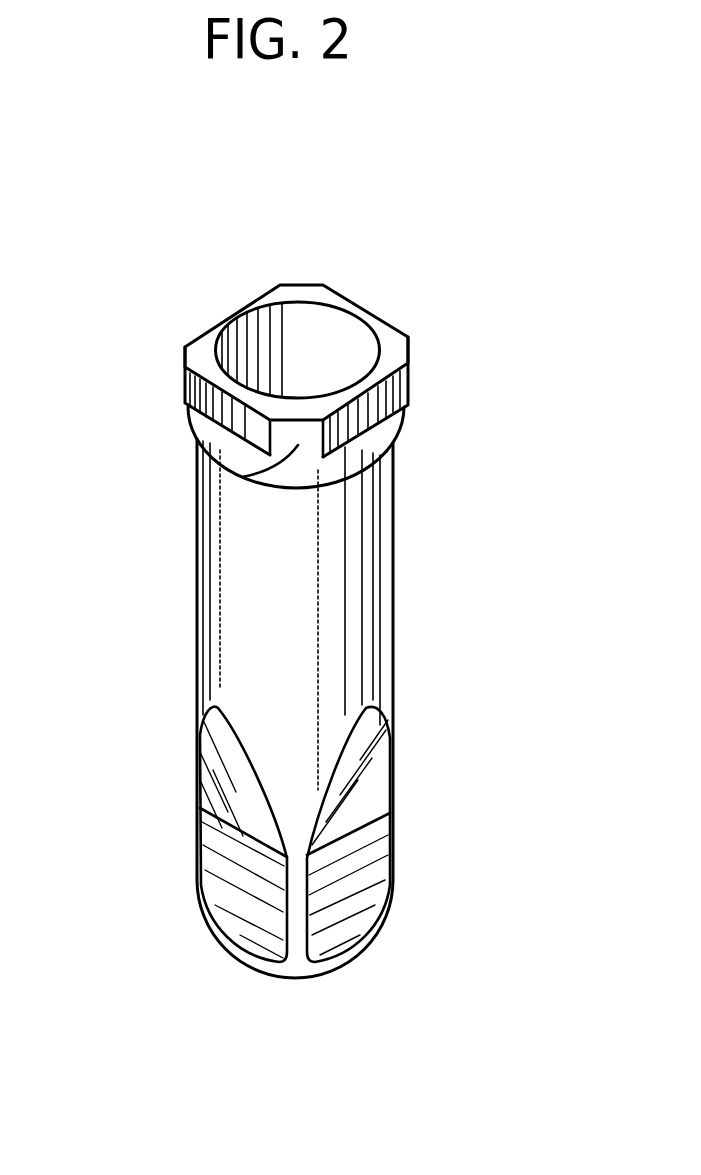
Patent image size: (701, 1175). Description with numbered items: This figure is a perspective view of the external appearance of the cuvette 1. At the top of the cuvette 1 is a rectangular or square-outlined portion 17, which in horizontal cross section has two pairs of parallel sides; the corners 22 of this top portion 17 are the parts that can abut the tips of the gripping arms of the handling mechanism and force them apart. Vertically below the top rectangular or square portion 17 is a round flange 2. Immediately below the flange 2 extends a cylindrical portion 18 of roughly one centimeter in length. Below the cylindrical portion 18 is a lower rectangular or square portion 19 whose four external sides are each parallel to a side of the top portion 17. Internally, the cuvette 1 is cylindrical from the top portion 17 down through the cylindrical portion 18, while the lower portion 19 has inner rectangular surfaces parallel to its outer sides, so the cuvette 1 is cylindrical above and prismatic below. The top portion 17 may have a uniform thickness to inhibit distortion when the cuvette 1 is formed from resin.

The cuvette 1 is at (392, 708).
The round flange 2 is at (311, 408).
The top rectangular or square portion 17 is at (398, 393).
The cylindrical portion 18 is at (355, 552).
The lower rectangular or square portion 19 is at (377, 870).
The corners 22 is at (245, 477).